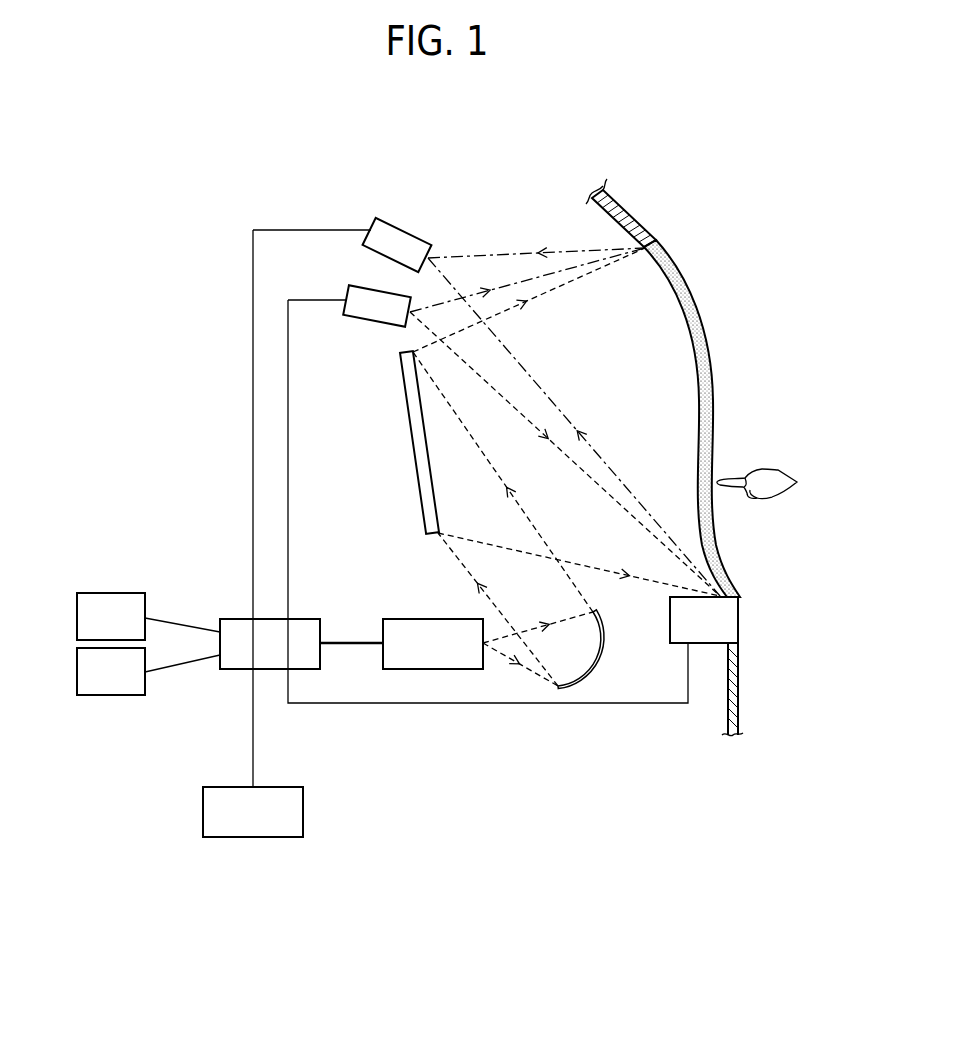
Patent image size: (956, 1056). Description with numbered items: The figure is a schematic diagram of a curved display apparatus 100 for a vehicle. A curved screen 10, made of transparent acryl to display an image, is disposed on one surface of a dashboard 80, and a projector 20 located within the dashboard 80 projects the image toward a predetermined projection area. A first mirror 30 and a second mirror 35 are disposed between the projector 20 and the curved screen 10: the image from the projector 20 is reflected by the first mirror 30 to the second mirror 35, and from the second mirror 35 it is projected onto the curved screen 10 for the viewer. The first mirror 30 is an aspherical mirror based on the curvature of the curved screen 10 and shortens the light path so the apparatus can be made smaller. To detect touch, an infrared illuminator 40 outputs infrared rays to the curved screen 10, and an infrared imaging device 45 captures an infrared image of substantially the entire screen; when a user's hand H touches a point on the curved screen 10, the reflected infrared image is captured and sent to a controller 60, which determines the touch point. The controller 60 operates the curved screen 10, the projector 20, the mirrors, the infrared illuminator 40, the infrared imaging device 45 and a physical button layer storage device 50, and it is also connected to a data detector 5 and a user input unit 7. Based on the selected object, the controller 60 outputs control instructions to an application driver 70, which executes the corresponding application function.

The curved display apparatus 100 is at (478, 218).
The data detector 5 is at (110, 592).
The user input unit 7 is at (110, 697).
The curved screen 10 is at (707, 358).
The projector 20 is at (430, 618).
The first mirror 30 is at (595, 657).
The second mirror 35 is at (407, 447).
The infrared illuminator 40 is at (376, 325).
The infrared imaging device 45 is at (407, 227).
The physical button layer storage device 50 is at (740, 618).
The controller 60 is at (305, 618).
The application driver 70 is at (253, 839).
The dashboard 80 is at (739, 690).
The user's hand H is at (767, 475).